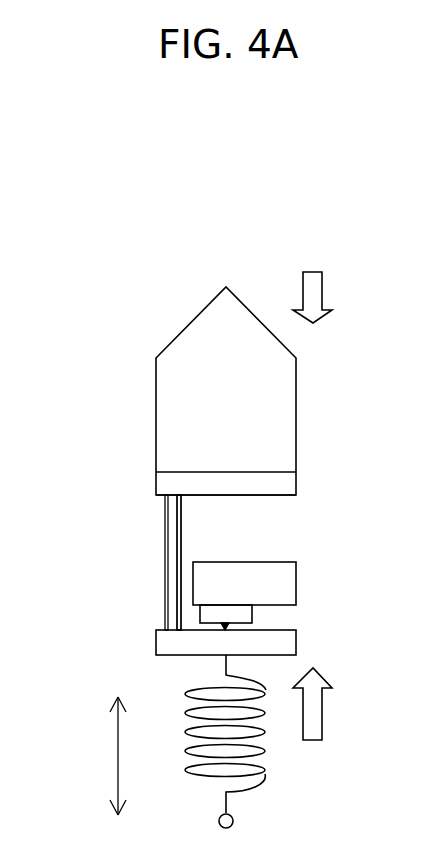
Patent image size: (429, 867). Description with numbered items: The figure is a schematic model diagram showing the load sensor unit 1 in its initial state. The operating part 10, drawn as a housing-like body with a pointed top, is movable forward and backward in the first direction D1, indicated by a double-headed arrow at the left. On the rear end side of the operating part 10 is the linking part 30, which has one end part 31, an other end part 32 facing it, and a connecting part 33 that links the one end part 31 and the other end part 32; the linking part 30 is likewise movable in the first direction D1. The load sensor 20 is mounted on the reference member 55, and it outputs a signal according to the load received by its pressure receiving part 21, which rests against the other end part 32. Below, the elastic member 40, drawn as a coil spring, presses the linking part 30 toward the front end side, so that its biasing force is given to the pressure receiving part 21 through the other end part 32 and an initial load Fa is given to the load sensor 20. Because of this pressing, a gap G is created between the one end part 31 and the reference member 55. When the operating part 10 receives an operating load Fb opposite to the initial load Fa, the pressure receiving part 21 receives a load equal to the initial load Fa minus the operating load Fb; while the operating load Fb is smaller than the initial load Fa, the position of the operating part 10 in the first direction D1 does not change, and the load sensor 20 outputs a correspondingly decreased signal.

The load sensor unit 1 is at (263, 198).
The operating part 10 is at (268, 421).
The one end part 31 is at (162, 483).
The linking part 30 is at (165, 518).
The connecting part 33 is at (175, 547).
The other end part 32 is at (163, 643).
The reference member 55 is at (278, 583).
The load sensor 20 is at (252, 615).
The pressure receiving part 21 is at (232, 633).
The elastic member 40 is at (270, 760).
The gap G is at (268, 530).
The initial load Fa is at (328, 704).
The operating load Fb is at (329, 297).
The first direction D1 is at (118, 758).